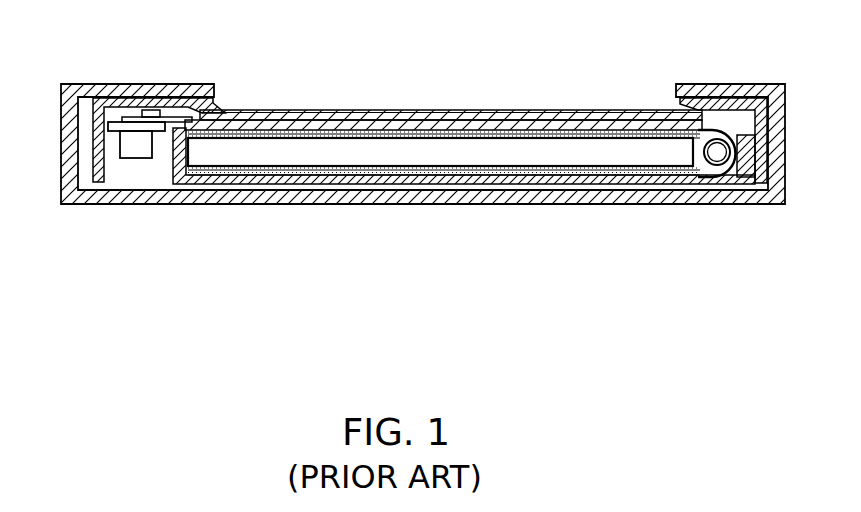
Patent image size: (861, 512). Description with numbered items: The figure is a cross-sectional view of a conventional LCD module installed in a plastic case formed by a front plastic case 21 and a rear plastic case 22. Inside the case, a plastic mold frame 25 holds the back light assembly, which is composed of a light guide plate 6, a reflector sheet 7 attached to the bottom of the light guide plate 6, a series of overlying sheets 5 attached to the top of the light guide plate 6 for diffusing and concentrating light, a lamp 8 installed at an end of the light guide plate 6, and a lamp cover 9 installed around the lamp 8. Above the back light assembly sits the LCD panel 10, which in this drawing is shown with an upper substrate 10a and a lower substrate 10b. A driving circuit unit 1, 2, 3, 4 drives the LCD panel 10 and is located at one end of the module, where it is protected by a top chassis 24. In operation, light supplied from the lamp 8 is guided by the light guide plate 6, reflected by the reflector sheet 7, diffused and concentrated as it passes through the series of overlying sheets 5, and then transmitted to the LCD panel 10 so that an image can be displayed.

The driving circuit unit 1 is at (160, 110).
The driving circuit unit 2 is at (178, 119).
The driving circuit unit 3 is at (108, 127).
The driving circuit unit 4 is at (135, 150).
The series of overlying sheets 5 is at (575, 128).
The light guide plate 6 is at (438, 157).
The reflector sheet 7 is at (545, 175).
The lamp 8 is at (717, 158).
The lamp cover 9 is at (748, 160).
The LCD panel 10 is at (443, 86).
The upper substrate 10a is at (455, 118).
The lower substrate 10b is at (505, 128).
The front plastic case 21 is at (108, 90).
The rear plastic case 22 is at (234, 197).
The top chassis 24 is at (97, 112).
The plastic mold frame 25 is at (335, 180).